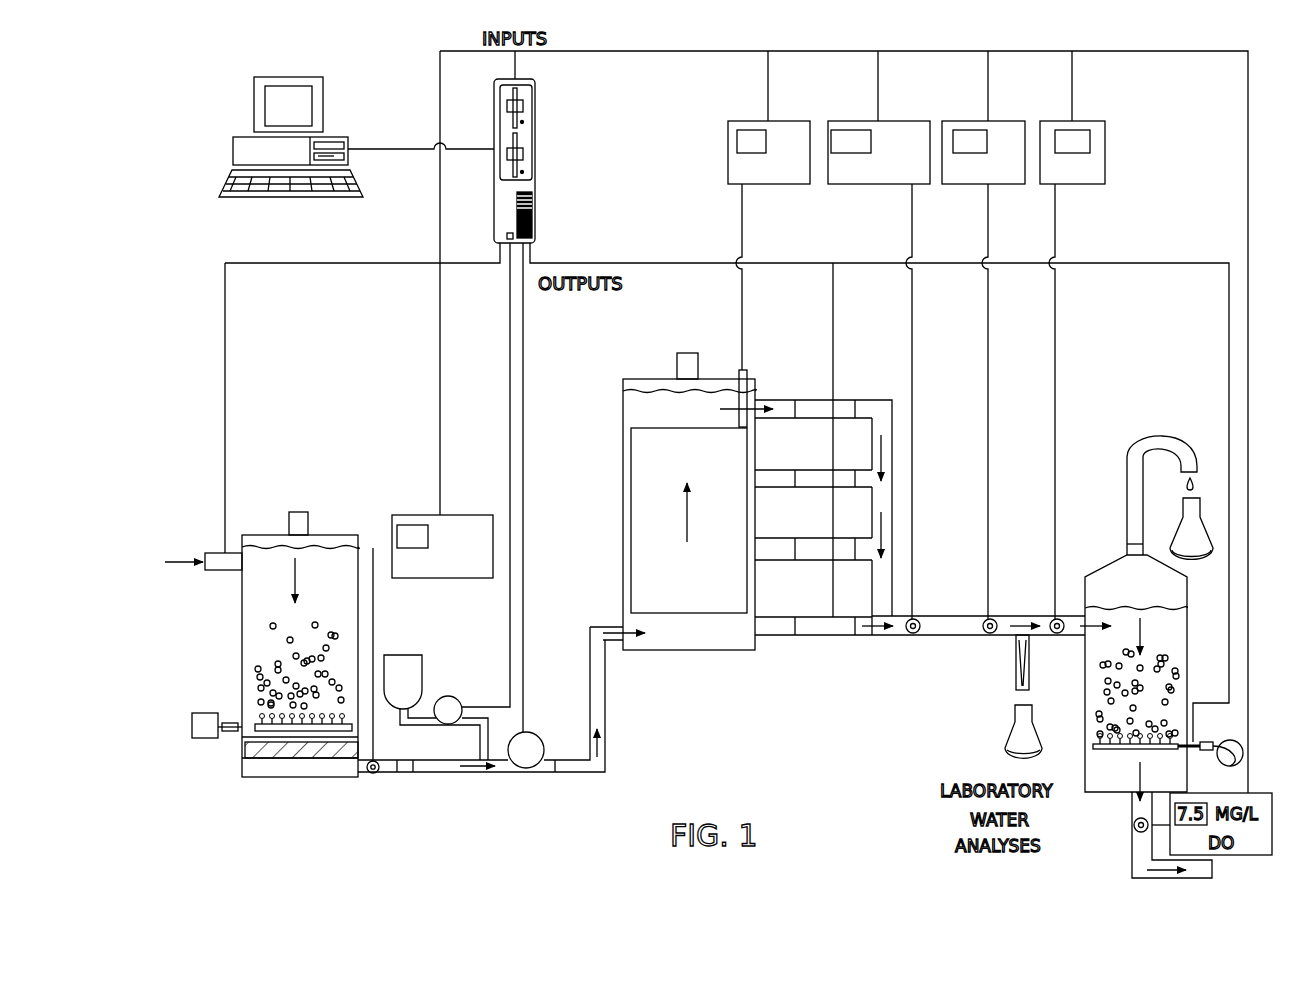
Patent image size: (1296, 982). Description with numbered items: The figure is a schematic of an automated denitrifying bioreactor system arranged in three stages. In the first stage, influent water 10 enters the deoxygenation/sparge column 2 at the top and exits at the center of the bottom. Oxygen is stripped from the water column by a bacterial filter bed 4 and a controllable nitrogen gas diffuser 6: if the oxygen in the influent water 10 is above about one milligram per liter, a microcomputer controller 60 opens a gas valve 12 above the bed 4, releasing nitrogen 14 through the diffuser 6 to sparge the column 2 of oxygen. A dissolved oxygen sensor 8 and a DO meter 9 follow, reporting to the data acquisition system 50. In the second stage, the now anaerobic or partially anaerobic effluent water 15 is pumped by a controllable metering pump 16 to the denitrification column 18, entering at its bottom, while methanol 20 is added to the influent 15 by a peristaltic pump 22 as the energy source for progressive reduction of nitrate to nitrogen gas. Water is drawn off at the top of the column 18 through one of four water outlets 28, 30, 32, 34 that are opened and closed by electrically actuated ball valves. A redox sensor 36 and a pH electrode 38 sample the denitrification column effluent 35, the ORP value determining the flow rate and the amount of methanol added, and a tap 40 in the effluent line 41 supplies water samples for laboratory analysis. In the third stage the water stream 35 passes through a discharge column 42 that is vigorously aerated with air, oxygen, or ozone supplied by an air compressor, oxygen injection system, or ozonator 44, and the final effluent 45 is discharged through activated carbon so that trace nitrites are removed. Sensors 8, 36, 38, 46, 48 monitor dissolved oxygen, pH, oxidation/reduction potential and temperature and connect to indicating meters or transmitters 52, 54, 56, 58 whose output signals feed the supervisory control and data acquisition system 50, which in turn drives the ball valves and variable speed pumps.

The deoxygenation/sparge column 2 is at (283, 586).
The bacterial filter bed 4 is at (242, 747).
The nitrogen gas diffuser 6 is at (352, 727).
The dissolved oxygen sensor 8 is at (377, 774).
The DO meter 9 is at (455, 580).
The influent water 10 is at (170, 563).
The gas valve 12 is at (228, 723).
The nitrogen 14 is at (202, 713).
The effluent water 15 is at (478, 773).
The metering pump 16 is at (530, 768).
The denitrification column 18 is at (623, 563).
The methanol 20 is at (417, 655).
The peristaltic pump 22 is at (446, 697).
The water outlet 28 is at (820, 389).
The water outlet 30 is at (820, 458).
The water outlet 32 is at (820, 528).
The water outlet 34 is at (820, 605).
The denitrification column effluent 35 is at (877, 636).
The redox sensor 36 is at (992, 634).
The pH electrode 38 is at (1059, 634).
The tap 40 is at (1017, 688).
The effluent line 41 is at (965, 613).
The discharge column 42 is at (1175, 639).
The air compressor, oxygen injection system, or ozonator 44 is at (1243, 773).
The final effluent 45 is at (1163, 870).
The sensor 46 is at (915, 634).
The sensor 48 is at (1133, 827).
The supervisory control and data acquisition system 50 is at (535, 173).
The indicating meter or transmitter 52 is at (777, 185).
The indicating meter or transmitter 54 is at (862, 185).
The indicating meter or transmitter 56 is at (967, 185).
The indicating meter or transmitter 58 is at (1090, 185).
The microcomputer controller 60 is at (238, 103).